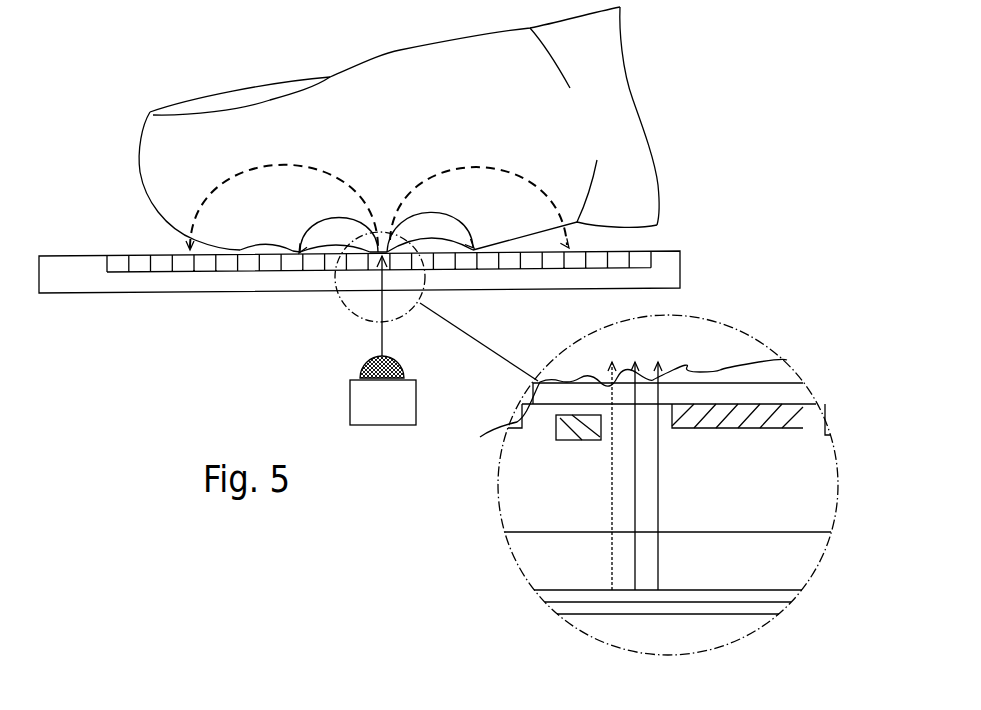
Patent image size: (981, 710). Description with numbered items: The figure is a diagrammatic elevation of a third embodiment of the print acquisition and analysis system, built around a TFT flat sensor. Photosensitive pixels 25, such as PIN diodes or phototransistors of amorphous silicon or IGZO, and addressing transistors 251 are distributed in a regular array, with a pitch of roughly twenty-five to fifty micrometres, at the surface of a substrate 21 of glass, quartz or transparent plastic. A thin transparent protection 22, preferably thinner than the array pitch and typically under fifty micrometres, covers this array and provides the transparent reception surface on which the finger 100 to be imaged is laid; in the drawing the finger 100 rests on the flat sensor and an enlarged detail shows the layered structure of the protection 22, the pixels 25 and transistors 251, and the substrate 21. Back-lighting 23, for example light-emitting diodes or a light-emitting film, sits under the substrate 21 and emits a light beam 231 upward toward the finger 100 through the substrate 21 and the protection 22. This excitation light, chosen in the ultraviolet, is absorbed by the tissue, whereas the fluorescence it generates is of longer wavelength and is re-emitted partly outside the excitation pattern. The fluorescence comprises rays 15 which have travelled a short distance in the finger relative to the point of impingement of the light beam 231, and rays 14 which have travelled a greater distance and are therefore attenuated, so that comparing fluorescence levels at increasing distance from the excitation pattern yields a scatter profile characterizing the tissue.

The rays 14 is at (212, 183).
The rays 15 is at (316, 221).
The finger 100 is at (718, 346).
The substrate 21 is at (833, 493).
The transparent protection 22 is at (803, 391).
The back-lighting 23 is at (792, 600).
The light beam 231 is at (376, 338).
The photosensitive pixels 25 is at (520, 426).
The addressing transistors 251 is at (832, 428).